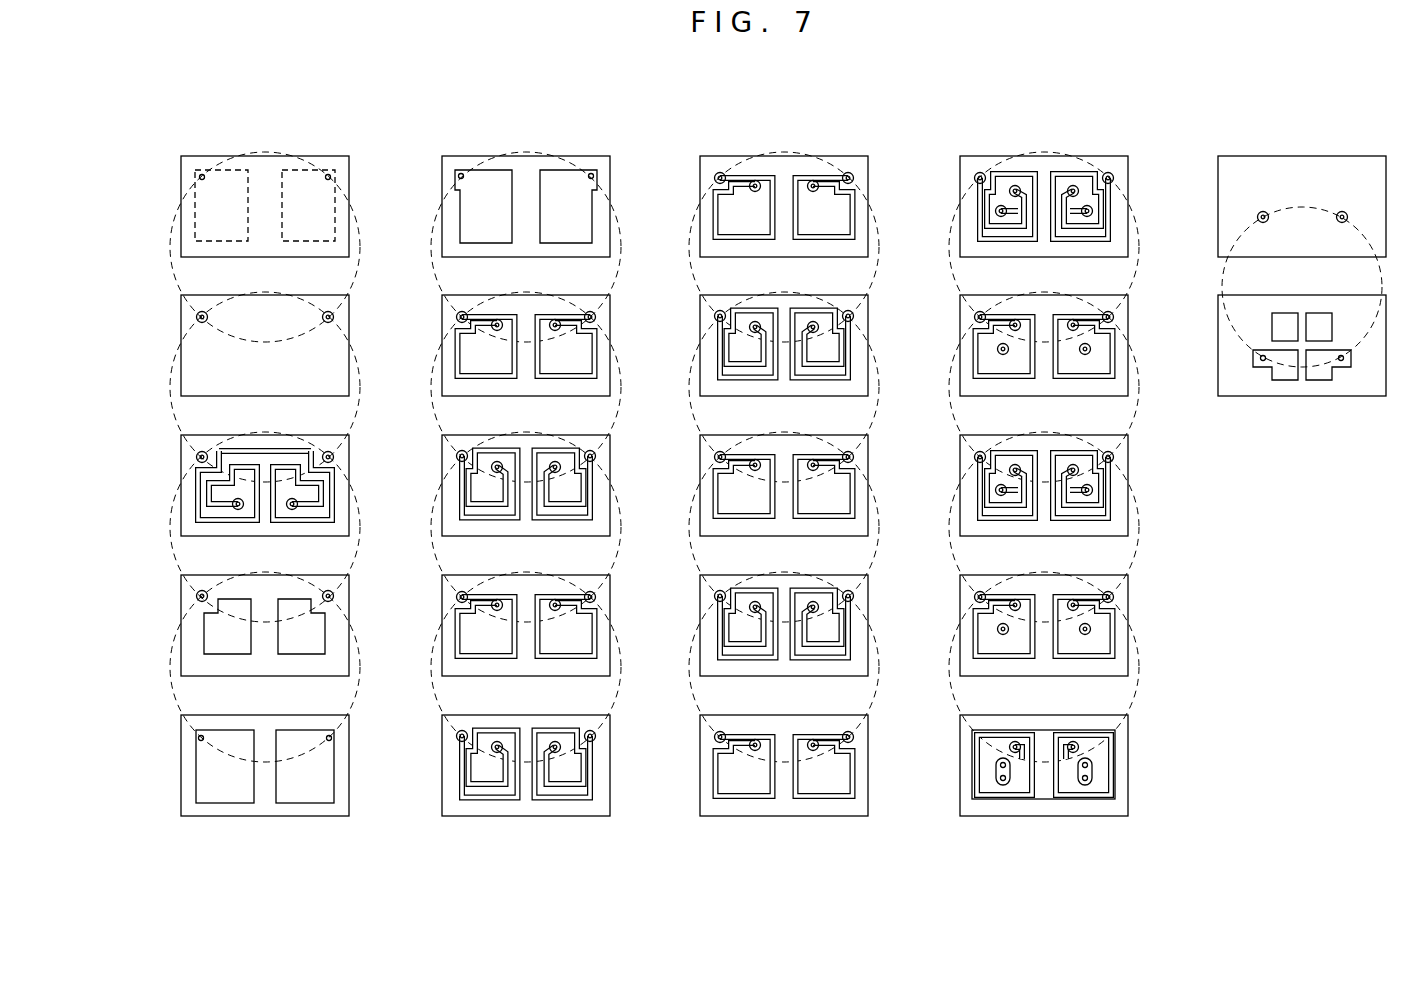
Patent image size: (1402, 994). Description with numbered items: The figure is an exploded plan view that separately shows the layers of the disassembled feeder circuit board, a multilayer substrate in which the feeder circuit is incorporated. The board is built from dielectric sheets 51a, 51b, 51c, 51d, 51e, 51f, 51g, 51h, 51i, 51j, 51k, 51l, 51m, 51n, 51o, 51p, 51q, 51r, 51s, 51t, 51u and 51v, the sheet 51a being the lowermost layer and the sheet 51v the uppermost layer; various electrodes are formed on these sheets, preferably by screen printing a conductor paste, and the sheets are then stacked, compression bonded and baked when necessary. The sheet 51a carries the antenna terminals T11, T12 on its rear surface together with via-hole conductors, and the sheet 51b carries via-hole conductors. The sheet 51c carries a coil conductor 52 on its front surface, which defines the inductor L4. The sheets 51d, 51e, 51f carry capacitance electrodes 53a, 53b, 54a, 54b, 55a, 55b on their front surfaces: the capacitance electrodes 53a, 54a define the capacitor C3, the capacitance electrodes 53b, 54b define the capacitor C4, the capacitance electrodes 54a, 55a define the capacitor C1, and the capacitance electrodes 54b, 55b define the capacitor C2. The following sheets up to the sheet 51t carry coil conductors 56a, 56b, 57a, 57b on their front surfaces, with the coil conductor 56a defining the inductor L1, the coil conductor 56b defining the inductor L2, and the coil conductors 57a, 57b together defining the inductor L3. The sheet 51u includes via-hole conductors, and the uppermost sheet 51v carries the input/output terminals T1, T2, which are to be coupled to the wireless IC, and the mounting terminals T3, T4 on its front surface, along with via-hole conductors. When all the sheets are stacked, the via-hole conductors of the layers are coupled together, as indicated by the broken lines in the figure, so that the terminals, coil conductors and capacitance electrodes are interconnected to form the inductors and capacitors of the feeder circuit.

The sheet 51a is at (343, 156).
The sheet 51b is at (335, 319).
The sheet 51c is at (348, 450).
The sheet 51d is at (348, 593).
The sheet 51e is at (348, 745).
The sheet 51f is at (609, 168).
The sheet 51g is at (609, 313).
The sheet 51h is at (606, 438).
The sheet 51i is at (607, 592).
The sheet 51j is at (607, 715).
The sheet 51k is at (826, 153).
The sheet 51l is at (853, 298).
The sheet 51m is at (862, 452).
The sheet 51n is at (860, 573).
The sheet 51o is at (862, 732).
The sheet 51p is at (1105, 153).
The sheet 51q is at (1123, 310).
The sheet 51r is at (1125, 440).
The sheet 51s is at (1128, 595).
The sheet 51t is at (1128, 728).
The sheet 51u is at (1352, 155).
The sheet 51v is at (1365, 400).
The antenna terminal T11 is at (222, 170).
The antenna terminal T12 is at (303, 170).
The coil conductor 52 is at (235, 460).
The capacitance electrode 53a is at (231, 599).
The capacitance electrode 53b is at (293, 599).
The capacitance electrode 54a is at (230, 735).
The capacitance electrode 54b is at (304, 735).
The capacitance electrode 55a is at (483, 176).
The capacitance electrode 55b is at (568, 176).
The coil conductor 56a is at (492, 310).
The coil conductor 56b is at (558, 310).
The coil conductor 57a is at (975, 220).
The coil conductor 57b is at (1110, 222).
The inductor L1 is at (592, 457).
The inductor L2 is at (702, 457).
The inductor L3 is at (1038, 495).
The inductor L4 is at (301, 485).
The capacitor C1 is at (483, 206).
The capacitor C2 is at (568, 206).
The capacitor C3 is at (227, 626).
The capacitor C4 is at (301, 626).
The input/output terminal T1 is at (1282, 380).
The input/output terminal T2 is at (1316, 380).
The mounting terminal T3 is at (1290, 313).
The mounting terminal T4 is at (1308, 313).